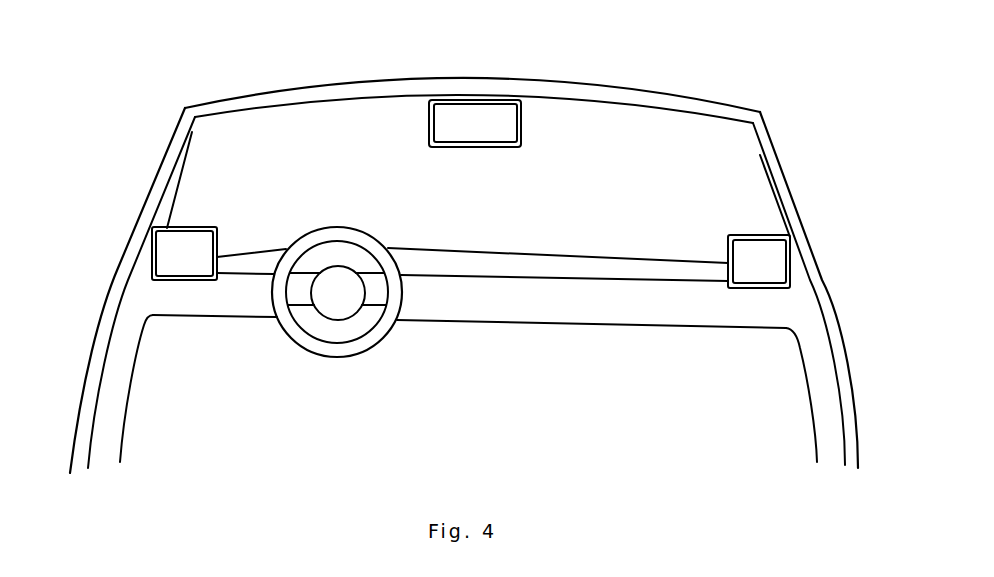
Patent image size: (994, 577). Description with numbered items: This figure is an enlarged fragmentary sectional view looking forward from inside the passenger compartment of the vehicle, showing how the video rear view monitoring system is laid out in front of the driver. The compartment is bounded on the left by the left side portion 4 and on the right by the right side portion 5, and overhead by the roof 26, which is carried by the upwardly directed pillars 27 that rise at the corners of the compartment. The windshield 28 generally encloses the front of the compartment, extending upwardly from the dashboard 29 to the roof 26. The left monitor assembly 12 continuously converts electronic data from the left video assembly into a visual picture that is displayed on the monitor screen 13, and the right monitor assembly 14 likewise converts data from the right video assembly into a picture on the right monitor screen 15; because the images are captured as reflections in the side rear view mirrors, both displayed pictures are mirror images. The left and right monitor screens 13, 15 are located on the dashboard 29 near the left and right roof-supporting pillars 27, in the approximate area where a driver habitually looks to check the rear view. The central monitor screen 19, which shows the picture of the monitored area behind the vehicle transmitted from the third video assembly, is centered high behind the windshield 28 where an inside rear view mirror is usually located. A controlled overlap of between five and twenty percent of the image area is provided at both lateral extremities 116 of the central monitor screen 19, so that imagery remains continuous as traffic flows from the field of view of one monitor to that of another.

The left side portion 4 is at (93, 345).
The right side portion 5 is at (850, 362).
The left monitor assembly 12 is at (152, 262).
The monitor screen 13 is at (198, 264).
The right monitor assembly 14 is at (788, 267).
The right monitor screen 15 is at (771, 272).
The central monitor screen 19 is at (493, 118).
The roof 26 is at (310, 100).
The pillars 27 is at (170, 208).
The windshield 28 is at (348, 196).
The dashboard 29 is at (493, 310).
The lateral extremities 116 is at (430, 123).